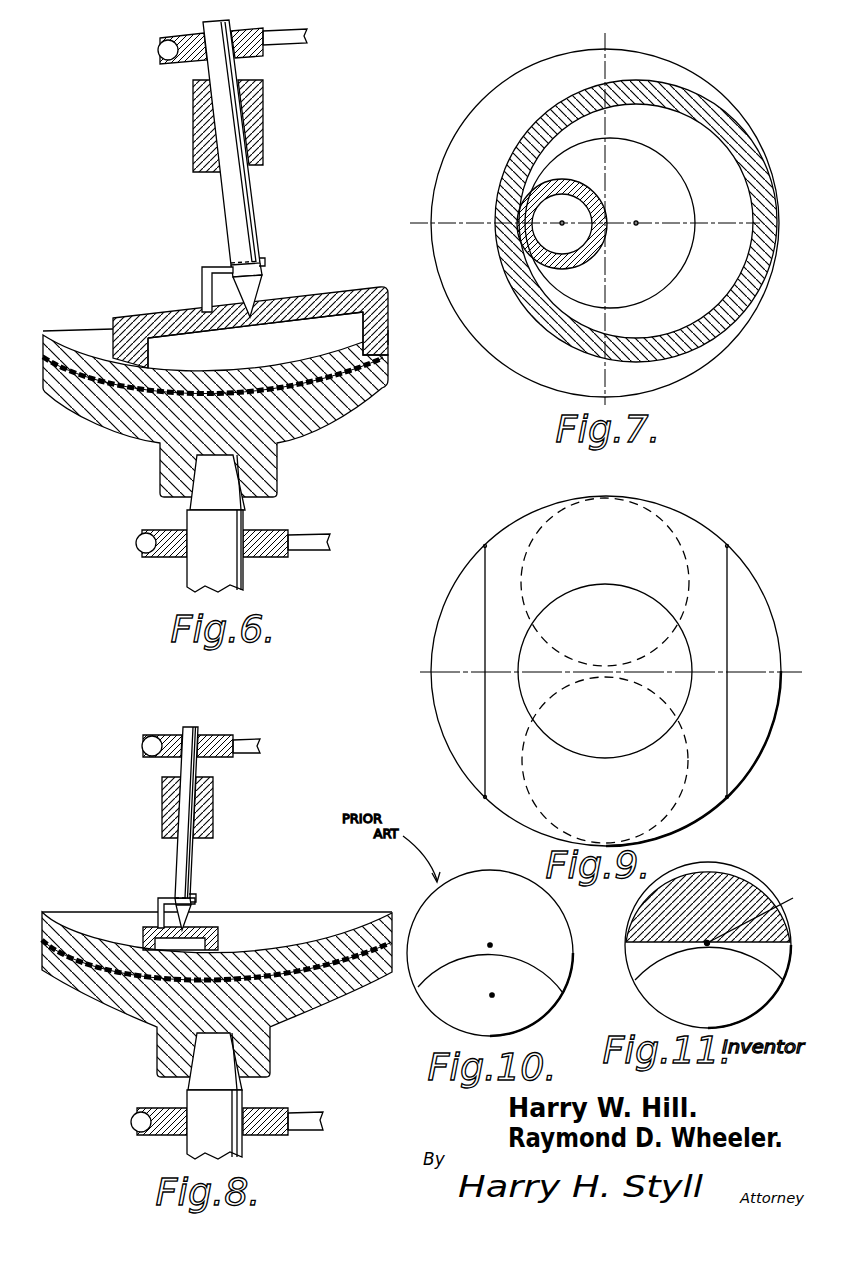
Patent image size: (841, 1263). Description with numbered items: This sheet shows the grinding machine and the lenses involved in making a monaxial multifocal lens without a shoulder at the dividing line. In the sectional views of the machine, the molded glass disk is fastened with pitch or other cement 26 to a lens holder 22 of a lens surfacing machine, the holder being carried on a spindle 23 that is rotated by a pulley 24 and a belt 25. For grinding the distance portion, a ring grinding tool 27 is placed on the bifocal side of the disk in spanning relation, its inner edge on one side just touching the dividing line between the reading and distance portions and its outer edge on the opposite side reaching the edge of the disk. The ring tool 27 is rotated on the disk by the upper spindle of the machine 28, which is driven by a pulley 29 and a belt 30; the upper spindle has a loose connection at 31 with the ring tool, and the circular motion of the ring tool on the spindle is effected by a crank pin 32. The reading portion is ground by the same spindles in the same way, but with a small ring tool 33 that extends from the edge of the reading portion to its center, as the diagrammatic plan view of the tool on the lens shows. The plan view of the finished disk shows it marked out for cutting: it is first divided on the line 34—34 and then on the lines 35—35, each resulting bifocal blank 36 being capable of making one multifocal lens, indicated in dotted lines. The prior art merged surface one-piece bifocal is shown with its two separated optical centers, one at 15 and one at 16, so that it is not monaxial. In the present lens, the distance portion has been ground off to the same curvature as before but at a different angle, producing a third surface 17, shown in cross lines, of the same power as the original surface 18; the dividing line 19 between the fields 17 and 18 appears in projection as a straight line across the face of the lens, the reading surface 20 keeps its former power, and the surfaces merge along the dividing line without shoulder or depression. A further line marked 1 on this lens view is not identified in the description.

In FIG. 11, the marking line 1 is at (755, 917).
In FIG. 10, the optical center 15 is at (490, 945).
In FIG. 10, the optical center 16 is at (492, 995).
In FIG. 11, the distance surface 17 is at (750, 887).
In FIG. 11, the intermediate surface 18 is at (782, 960).
In FIG. 11, the dividing line 19 is at (640, 947).
In FIG. 11, the reading surface 20 is at (762, 987).
In FIG. 6, the lens holder 22 is at (340, 410).
In FIG. 8, the lens holder 22 is at (310, 1003).
In FIG. 6, the spindle 23 is at (243, 517).
In FIG. 6, the pulley 24 is at (263, 557).
In FIG. 6, the belt 25 is at (330, 541).
In FIG. 6, the pitch or other cement 26 is at (388, 357).
In FIG. 6, the ring grinding tool 27 is at (330, 297).
In FIG. 7, the ring grinding tool 27 is at (745, 152).
In FIG. 6, the upper spindle of the machine 28 is at (252, 190).
In FIG. 6, the pulley 29 is at (263, 53).
In FIG. 6, the belt 30 is at (300, 35).
In FIG. 6, the loose connection 31 is at (262, 300).
In FIG. 6, the crank pin 32 is at (202, 287).
In FIG. 7, the small ring tool 33 is at (597, 248).
In FIG. 8, the small ring tool 33 is at (203, 930).
In FIG. 9, the dividing line 34 is at (461, 672).
In FIG. 9, the cutting lines 35 is at (485, 556).
In FIG. 6, the bifocal blank 36 is at (390, 337).
In FIG. 7, the bifocal blank 36 is at (546, 75).
In FIG. 8, the bifocal blank 36 is at (350, 920).
In FIG. 9, the bifocal blank 36 is at (690, 530).